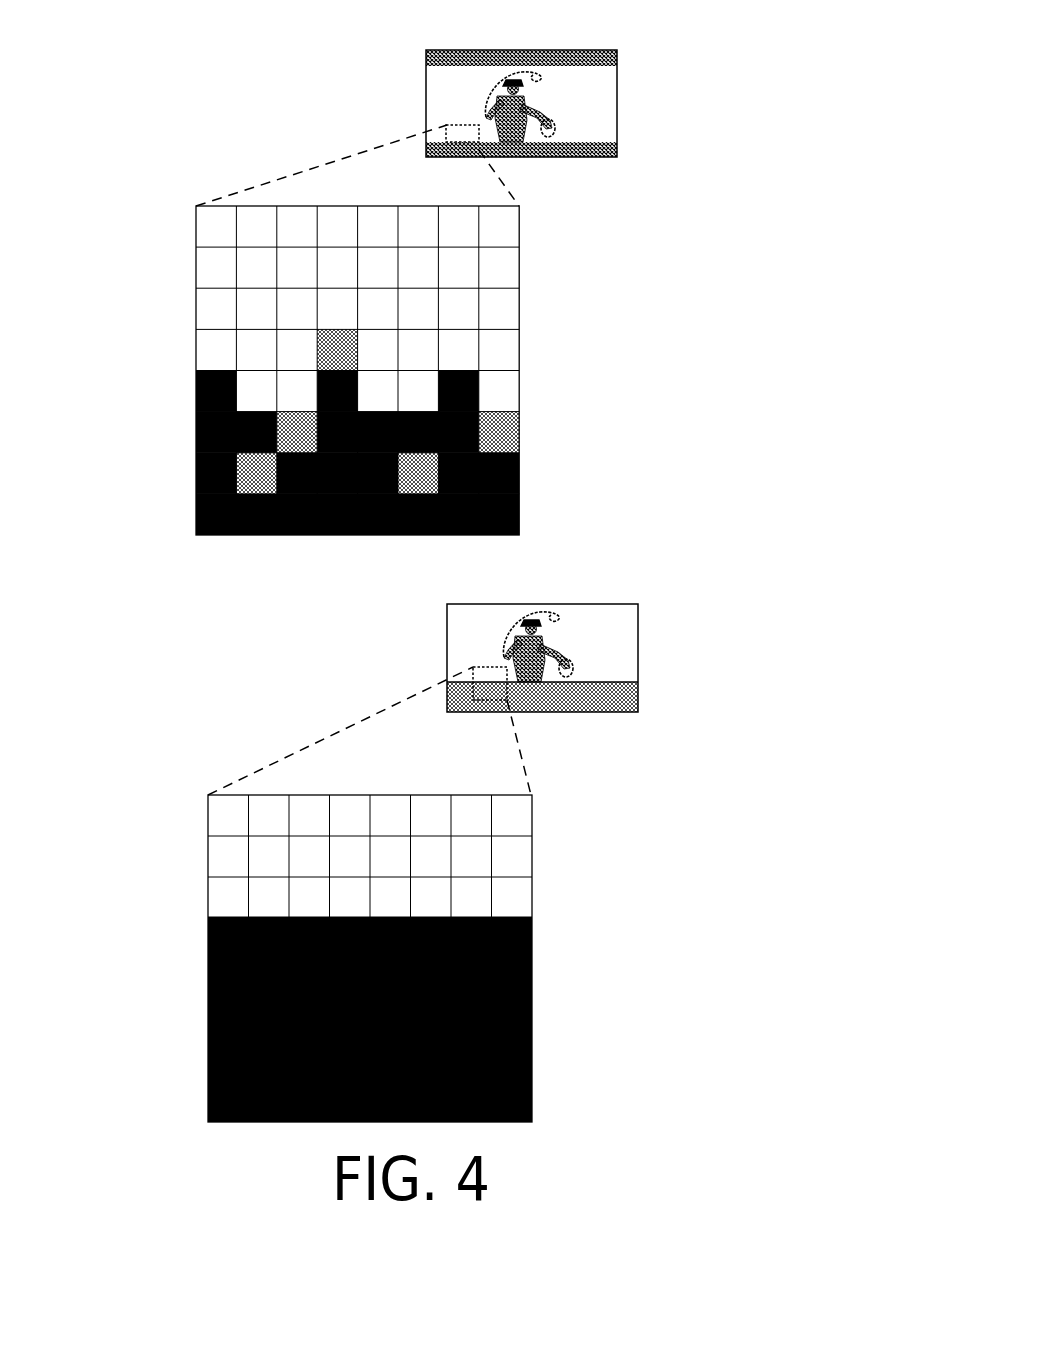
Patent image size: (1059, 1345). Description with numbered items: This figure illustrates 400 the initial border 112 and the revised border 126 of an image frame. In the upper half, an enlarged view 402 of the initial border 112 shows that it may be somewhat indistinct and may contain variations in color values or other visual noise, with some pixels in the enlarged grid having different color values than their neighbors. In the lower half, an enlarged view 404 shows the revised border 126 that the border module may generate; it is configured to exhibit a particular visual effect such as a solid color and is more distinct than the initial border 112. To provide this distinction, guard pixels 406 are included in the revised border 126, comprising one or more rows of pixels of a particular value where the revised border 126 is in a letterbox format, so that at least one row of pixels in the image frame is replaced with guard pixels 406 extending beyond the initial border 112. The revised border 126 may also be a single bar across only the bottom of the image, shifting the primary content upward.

The illustration of initial and revised borders 400 is at (690, 52).
The enlarged view 402 is at (239, 181).
The initial border 112 is at (547, 360).
The enlarged view 404 is at (245, 760).
The revised border 126 is at (535, 1122).
The guard pixels 406 is at (203, 1000).